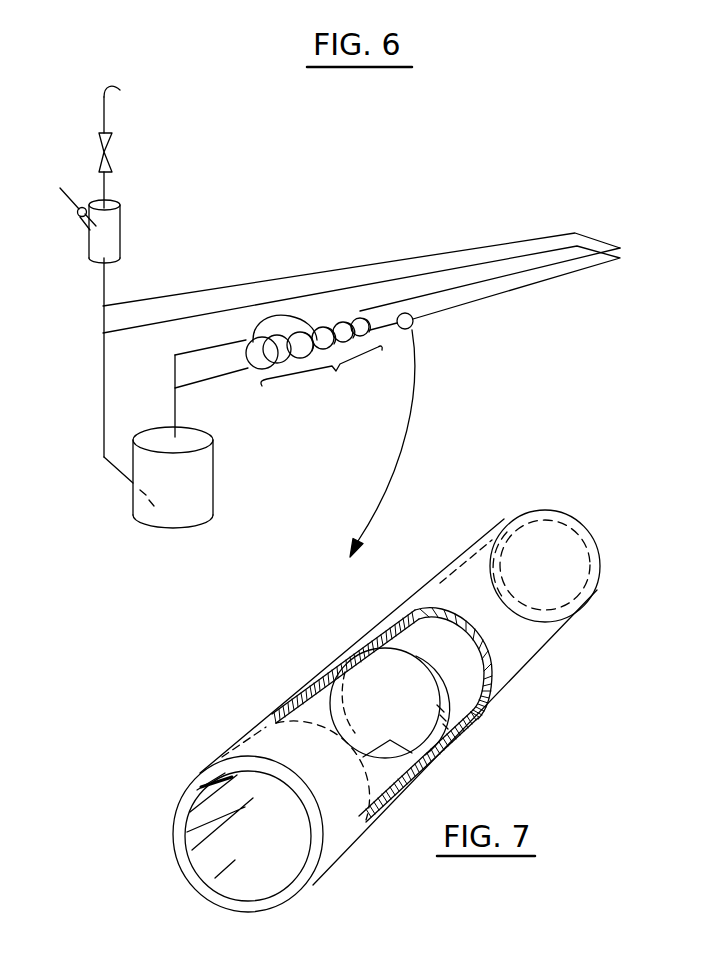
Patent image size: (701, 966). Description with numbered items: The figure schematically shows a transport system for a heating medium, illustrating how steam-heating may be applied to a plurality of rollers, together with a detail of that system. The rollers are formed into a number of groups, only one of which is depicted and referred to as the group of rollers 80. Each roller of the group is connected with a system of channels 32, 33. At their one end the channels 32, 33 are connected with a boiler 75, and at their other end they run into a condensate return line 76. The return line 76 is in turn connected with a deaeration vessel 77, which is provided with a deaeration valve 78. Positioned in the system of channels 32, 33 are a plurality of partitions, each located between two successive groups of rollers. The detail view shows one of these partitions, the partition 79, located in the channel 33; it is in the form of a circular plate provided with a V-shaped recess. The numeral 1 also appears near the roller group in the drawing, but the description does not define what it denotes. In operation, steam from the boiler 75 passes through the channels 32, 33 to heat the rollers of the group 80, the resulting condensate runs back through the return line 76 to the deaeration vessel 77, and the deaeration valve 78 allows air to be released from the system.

In FIG. 6, the vessel 1 is at (314, 323).
In FIG. 6, the channel 32 is at (548, 266).
In FIG. 6, the channel 33 is at (488, 262).
In FIG. 7, the channel 33 is at (273, 745).
In FIG. 6, the boiler 75 is at (203, 493).
In FIG. 6, the condensate return line 76 is at (103, 428).
In FIG. 6, the deaeration vessel 77 is at (113, 229).
In FIG. 6, the deaeration valve 78 is at (112, 151).
In FIG. 7, the partition 79 is at (352, 673).
In FIG. 6, the group of rollers 80 is at (314, 356).